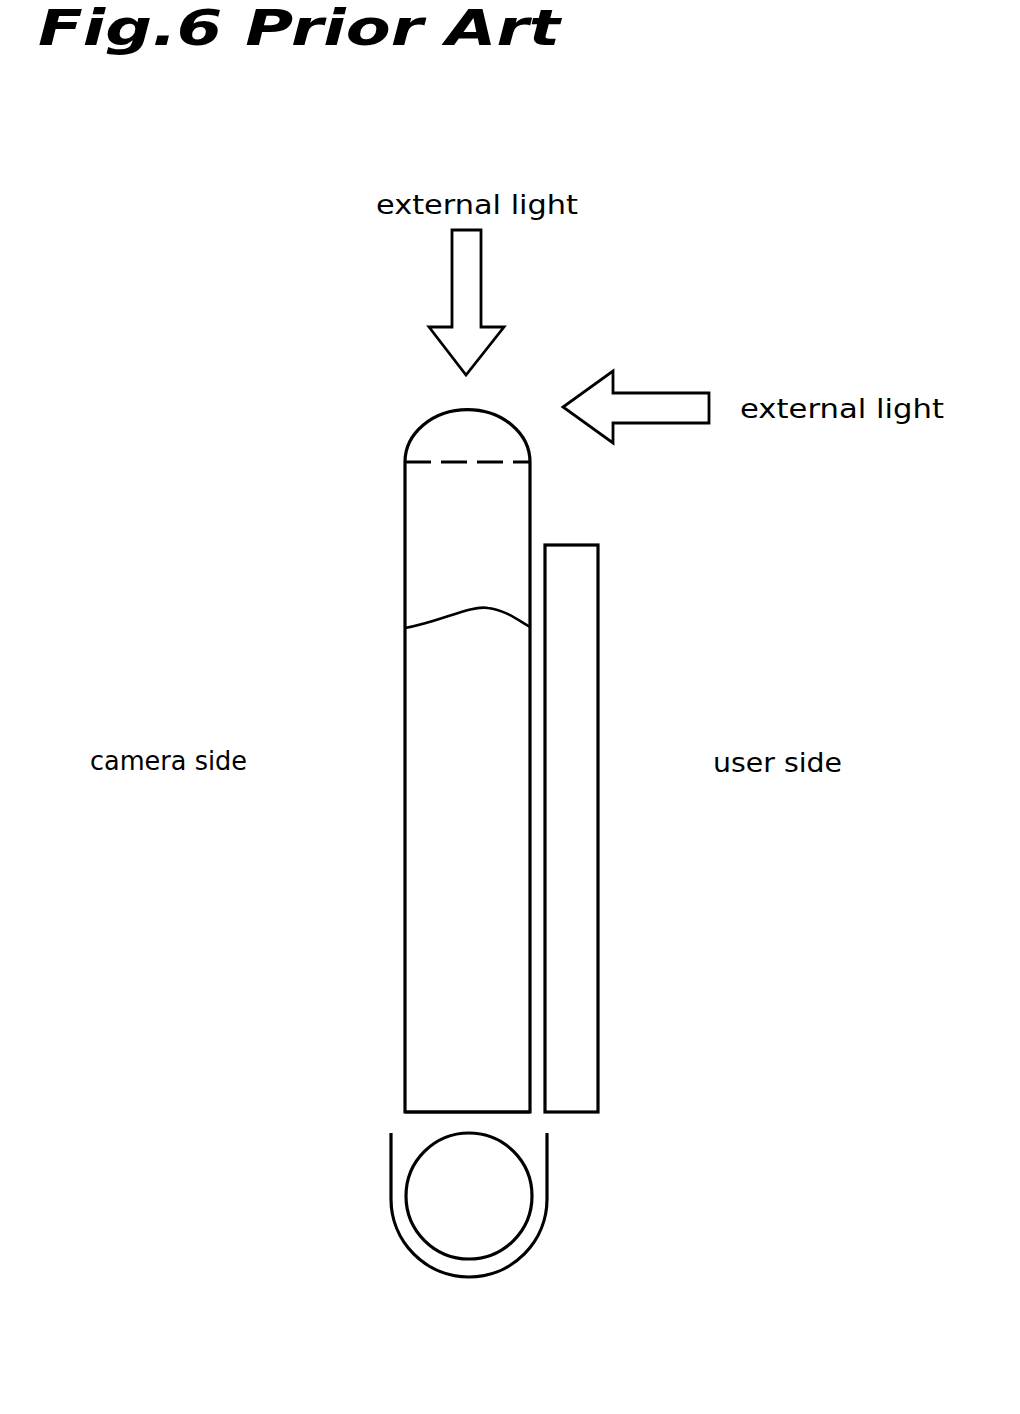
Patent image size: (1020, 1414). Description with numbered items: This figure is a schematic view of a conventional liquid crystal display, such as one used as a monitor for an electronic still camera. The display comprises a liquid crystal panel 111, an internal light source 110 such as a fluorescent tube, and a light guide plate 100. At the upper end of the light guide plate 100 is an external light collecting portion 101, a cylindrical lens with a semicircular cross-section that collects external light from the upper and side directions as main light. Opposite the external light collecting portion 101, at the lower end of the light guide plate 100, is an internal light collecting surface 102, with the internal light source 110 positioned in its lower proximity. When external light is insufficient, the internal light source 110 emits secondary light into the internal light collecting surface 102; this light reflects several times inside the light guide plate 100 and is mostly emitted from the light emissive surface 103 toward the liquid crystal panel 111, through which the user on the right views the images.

The light guide plate 100 is at (432, 925).
The external light collecting portion 101 is at (442, 442).
The internal light collecting surface 102 is at (456, 1110).
The light emissive surface 103 is at (405, 628).
The internal light source 110 is at (425, 1207).
The liquid crystal panel 111 is at (577, 710).